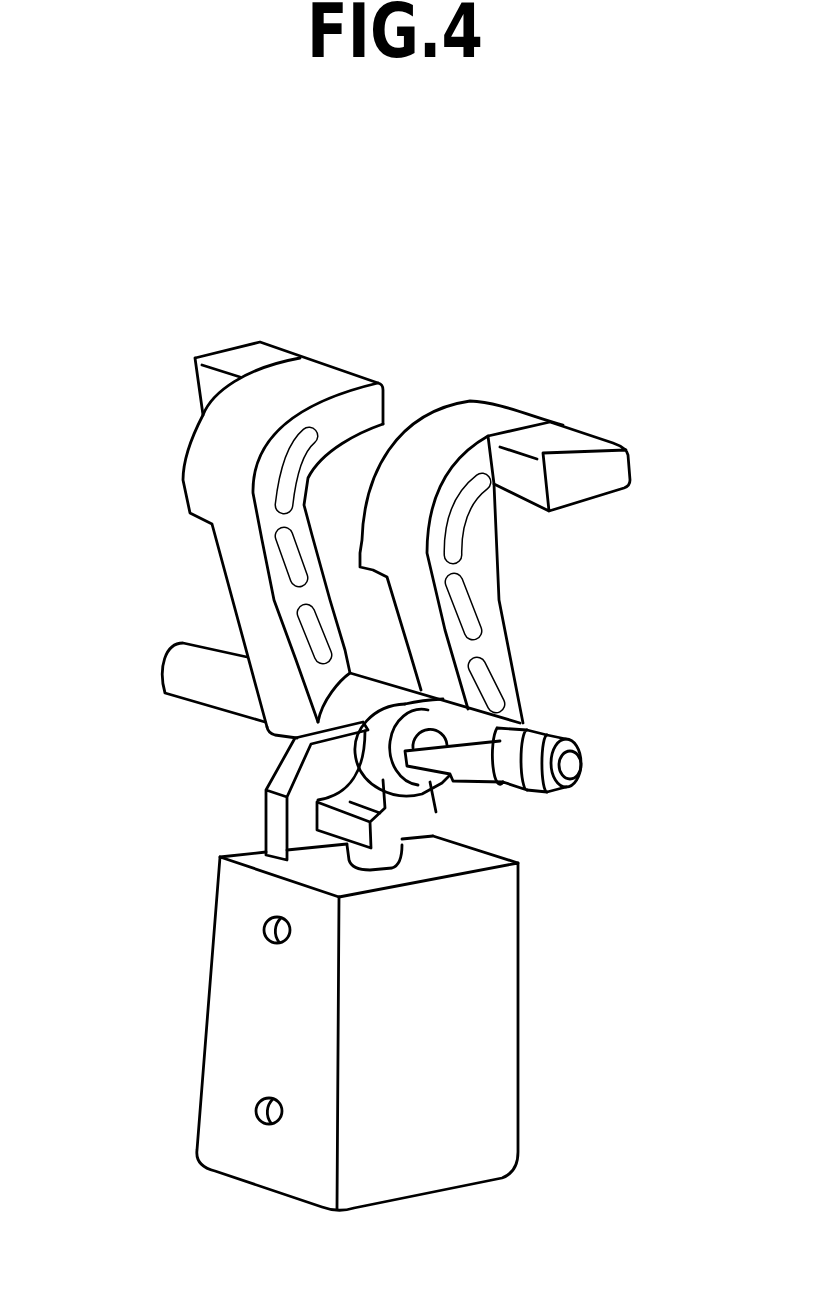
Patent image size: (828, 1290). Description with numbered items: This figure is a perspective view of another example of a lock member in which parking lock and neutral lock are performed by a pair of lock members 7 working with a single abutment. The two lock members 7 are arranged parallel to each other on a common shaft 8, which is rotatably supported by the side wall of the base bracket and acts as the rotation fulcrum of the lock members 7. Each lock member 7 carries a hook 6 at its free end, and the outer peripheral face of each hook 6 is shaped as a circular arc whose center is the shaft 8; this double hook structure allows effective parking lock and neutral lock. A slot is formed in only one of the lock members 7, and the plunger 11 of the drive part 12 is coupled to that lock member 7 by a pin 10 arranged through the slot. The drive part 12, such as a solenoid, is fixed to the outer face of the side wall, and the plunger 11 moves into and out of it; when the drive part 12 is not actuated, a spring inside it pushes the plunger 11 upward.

The hook 6 is at (320, 377).
The lock member 7 is at (240, 570).
The shaft 8 is at (193, 676).
The pin 10 is at (472, 770).
The plunger 11 is at (375, 860).
The drive part 12 is at (487, 1057).